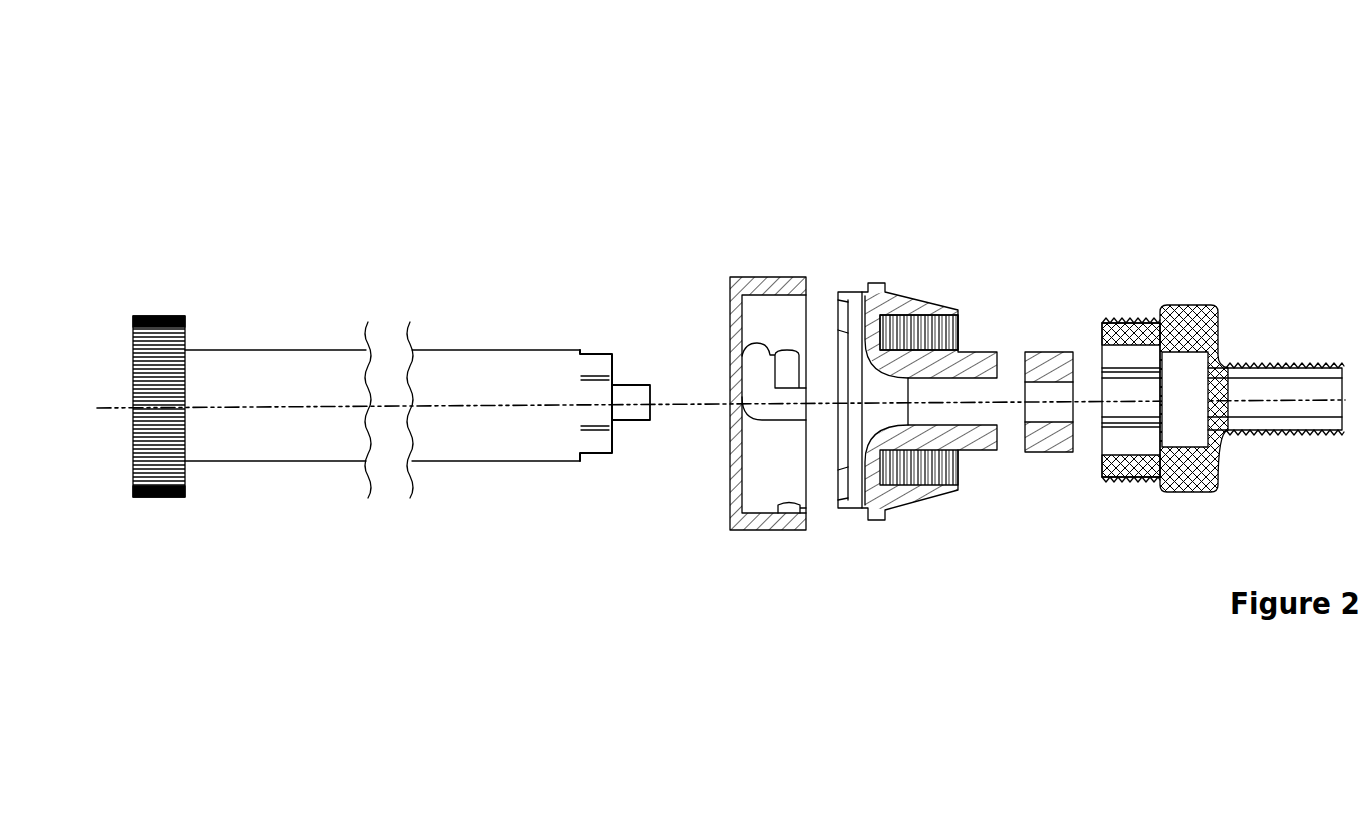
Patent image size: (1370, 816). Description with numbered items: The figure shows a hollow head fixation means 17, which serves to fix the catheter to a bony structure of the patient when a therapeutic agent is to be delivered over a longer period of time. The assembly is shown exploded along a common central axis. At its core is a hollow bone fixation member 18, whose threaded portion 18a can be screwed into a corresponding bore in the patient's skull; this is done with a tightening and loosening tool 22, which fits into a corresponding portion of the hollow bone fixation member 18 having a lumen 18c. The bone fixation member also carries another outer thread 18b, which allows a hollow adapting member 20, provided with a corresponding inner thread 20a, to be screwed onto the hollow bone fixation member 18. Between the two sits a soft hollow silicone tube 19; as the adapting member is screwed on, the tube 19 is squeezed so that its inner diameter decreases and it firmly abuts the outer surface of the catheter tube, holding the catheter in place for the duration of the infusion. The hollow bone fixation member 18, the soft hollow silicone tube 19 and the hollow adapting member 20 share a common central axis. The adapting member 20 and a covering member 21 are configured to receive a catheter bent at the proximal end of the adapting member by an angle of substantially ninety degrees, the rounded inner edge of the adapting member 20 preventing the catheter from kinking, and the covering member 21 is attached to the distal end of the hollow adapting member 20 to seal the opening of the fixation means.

The hollow head fixation means 17 is at (628, 122).
The hollow bone fixation member 18 is at (1193, 345).
The threaded portion 18a is at (1302, 372).
The outer thread 18b is at (1130, 333).
The lumen 18c is at (1127, 387).
The soft hollow silicone tube 19 is at (1054, 366).
The hollow adapting member 20 is at (955, 272).
The inner thread 20a is at (904, 332).
The covering member 21 is at (768, 253).
The tightening and loosening tool 22 is at (450, 325).